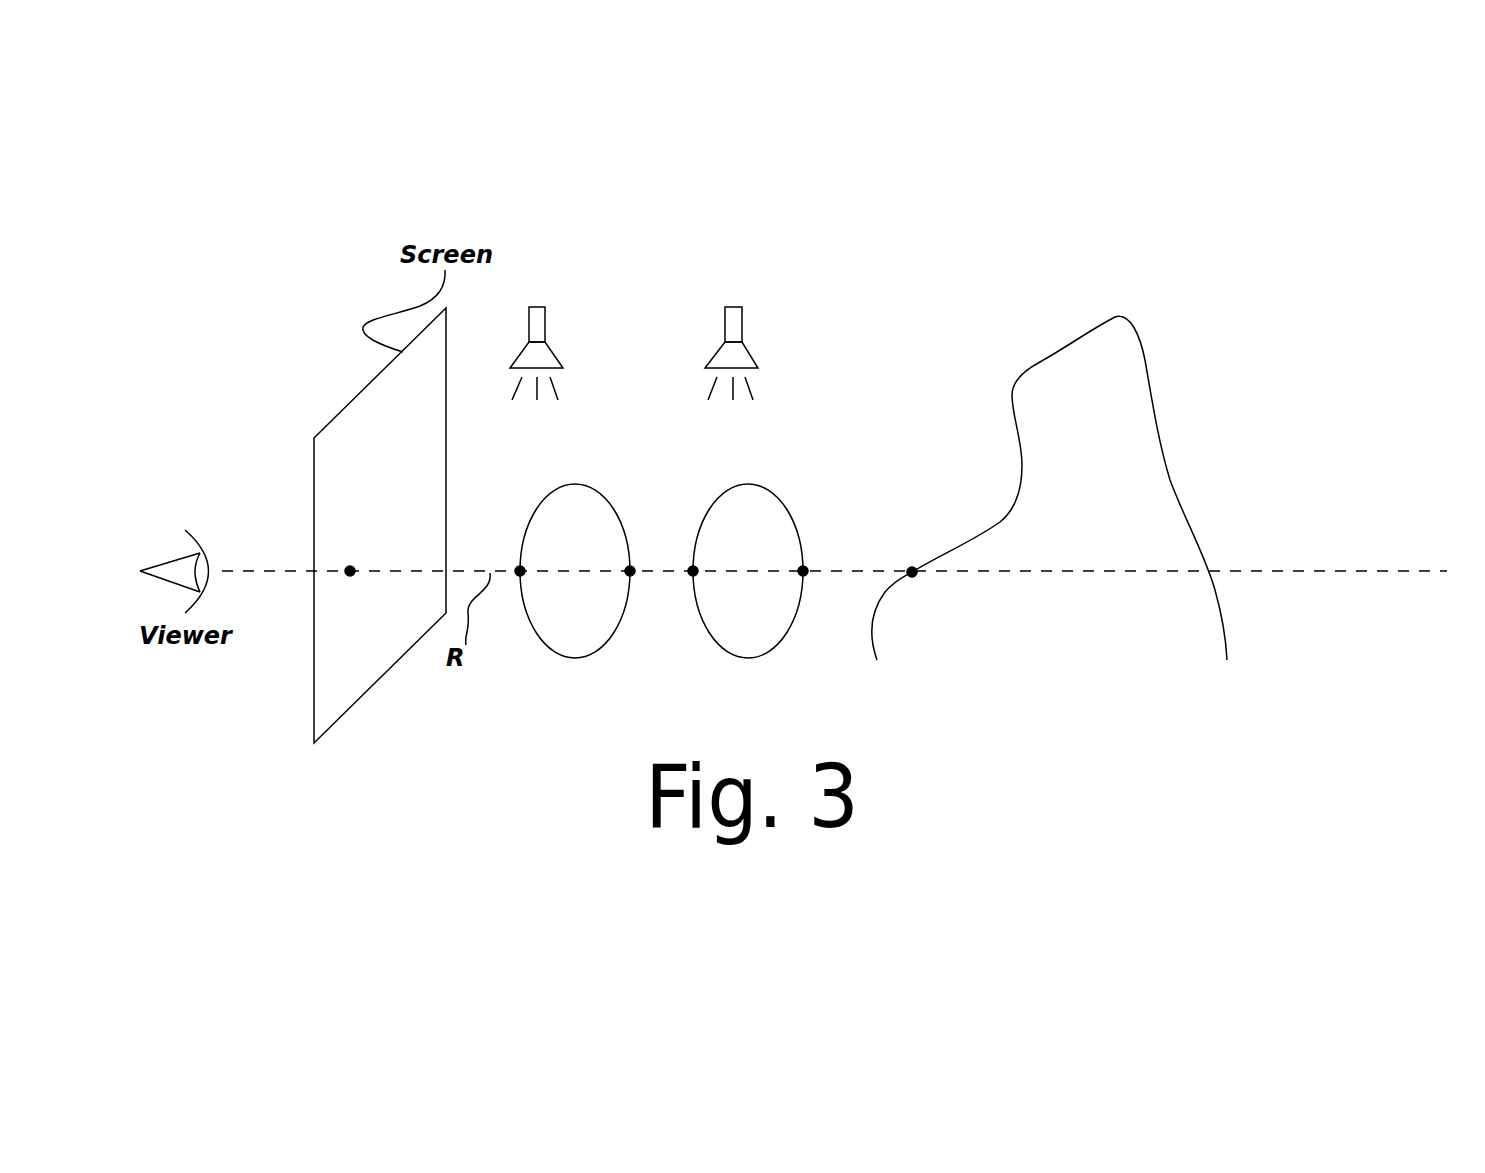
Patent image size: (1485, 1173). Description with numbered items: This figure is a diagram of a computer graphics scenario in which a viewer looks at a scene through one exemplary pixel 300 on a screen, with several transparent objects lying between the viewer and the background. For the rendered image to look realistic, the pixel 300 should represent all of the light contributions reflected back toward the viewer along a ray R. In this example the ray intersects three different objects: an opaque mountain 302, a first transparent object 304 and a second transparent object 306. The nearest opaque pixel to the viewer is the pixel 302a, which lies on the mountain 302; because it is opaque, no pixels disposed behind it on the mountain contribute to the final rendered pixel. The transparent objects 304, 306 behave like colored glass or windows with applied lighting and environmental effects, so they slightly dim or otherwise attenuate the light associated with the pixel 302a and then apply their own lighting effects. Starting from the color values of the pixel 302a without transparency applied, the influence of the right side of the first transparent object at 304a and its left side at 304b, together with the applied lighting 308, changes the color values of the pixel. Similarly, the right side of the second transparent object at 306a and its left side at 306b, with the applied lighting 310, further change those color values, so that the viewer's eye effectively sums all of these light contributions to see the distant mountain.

The pixel 300 is at (349, 566).
The opaque mountain 302 is at (1027, 355).
The pixel on the mountain 302a is at (913, 578).
The first transparent object 304 is at (747, 476).
The right side of object 304 304a is at (806, 567).
The left side of object 304 304b is at (694, 576).
The second transparent object 306 is at (572, 476).
The right side of object 306 306a is at (630, 566).
The left side of object 306 306b is at (521, 576).
The applied lighting 308 is at (727, 306).
The applied lighting 310 is at (541, 306).